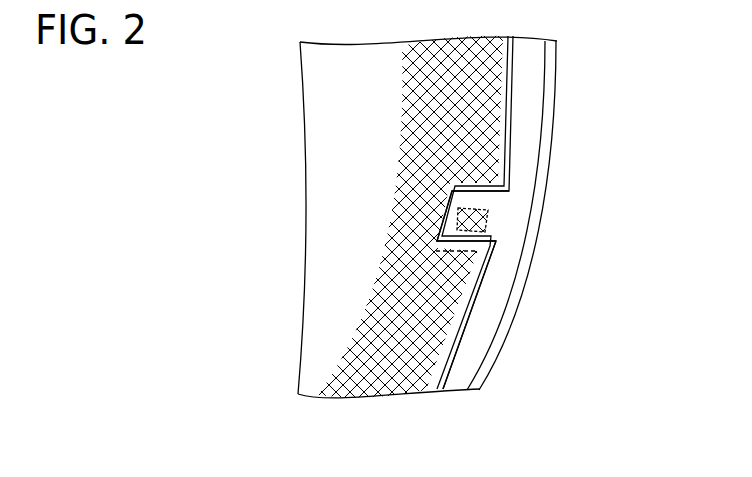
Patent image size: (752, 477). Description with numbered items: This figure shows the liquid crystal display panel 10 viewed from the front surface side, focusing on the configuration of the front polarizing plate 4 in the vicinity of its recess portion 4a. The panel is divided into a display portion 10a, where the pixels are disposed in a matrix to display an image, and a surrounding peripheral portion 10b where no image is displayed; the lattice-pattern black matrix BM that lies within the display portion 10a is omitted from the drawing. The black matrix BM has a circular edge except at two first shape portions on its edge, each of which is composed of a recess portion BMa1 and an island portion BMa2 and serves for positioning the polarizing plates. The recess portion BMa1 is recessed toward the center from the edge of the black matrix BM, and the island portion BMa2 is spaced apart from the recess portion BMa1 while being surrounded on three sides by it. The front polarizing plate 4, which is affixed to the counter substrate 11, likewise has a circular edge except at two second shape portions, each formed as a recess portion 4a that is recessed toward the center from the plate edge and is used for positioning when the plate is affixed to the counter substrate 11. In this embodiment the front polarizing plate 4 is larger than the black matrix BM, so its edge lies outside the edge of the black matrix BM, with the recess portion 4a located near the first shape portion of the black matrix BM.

The liquid crystal display panel 10 is at (347, 406).
The display portion 10a is at (334, 249).
The peripheral portion 10b is at (365, 357).
The counter substrate 11 is at (482, 330).
The black matrix BM is at (388, 398).
The front polarizing plate 4 is at (510, 115).
The recess portion 4a is at (448, 192).
The recess portion BMa1 is at (498, 248).
The island portion BMa2 is at (488, 218).